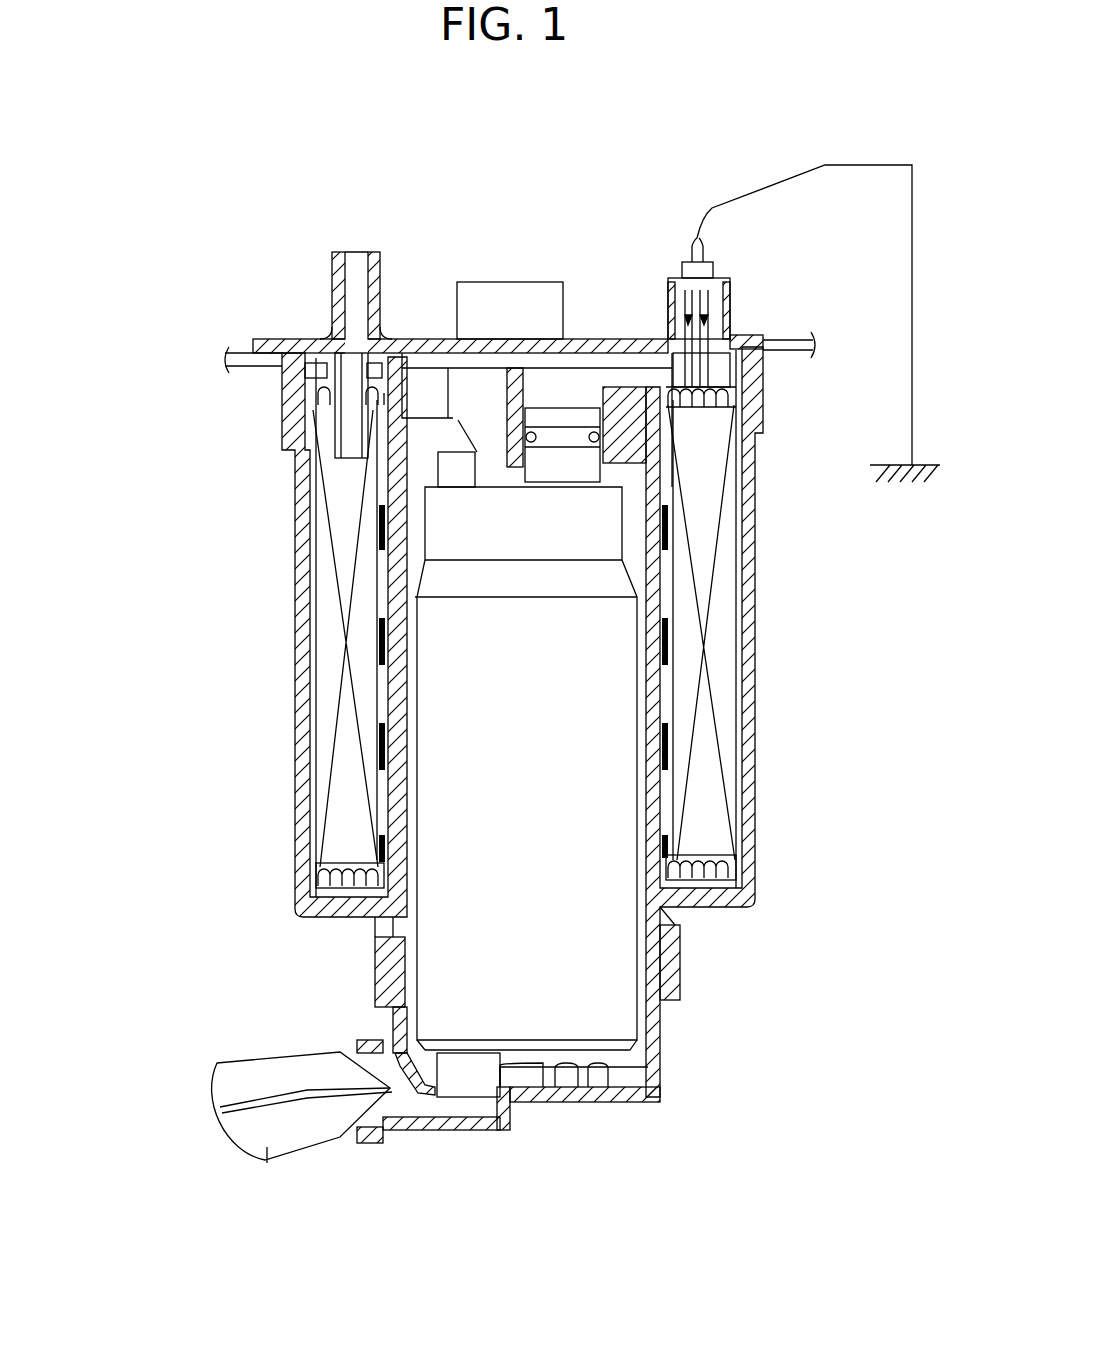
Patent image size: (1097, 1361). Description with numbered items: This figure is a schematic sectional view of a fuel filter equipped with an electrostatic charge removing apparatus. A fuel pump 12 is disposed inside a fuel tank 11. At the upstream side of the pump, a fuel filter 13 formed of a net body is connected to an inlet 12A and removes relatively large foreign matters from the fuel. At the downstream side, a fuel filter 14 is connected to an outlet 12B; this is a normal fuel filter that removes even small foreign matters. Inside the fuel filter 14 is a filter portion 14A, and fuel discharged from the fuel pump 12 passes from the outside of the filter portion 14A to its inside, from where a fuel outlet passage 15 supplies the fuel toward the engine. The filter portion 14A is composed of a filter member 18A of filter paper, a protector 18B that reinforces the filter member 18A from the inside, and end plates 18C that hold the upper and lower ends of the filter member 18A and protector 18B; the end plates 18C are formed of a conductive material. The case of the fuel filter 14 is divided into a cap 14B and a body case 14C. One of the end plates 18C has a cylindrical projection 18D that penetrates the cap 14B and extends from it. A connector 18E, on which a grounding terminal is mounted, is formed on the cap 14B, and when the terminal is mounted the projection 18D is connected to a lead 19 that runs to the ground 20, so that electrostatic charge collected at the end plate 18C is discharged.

The fuel tank 11 is at (238, 381).
The fuel pump 12 is at (465, 975).
The inlet 12A is at (467, 1073).
The outlet 12B is at (561, 410).
The fuel filter 13 is at (311, 1128).
The fuel filter 14 is at (764, 649).
The filter portion 14A is at (724, 721).
The cap 14B is at (314, 348).
The body case 14C is at (300, 745).
The fuel outlet passage 15 is at (356, 276).
The filter member 18A is at (704, 788).
The protector 18B is at (676, 820).
The end plate 18C is at (313, 402).
The cylindrical projection 18D is at (703, 347).
The connector 18E is at (732, 308).
The lead 19 is at (697, 240).
The ground 20 is at (905, 470).